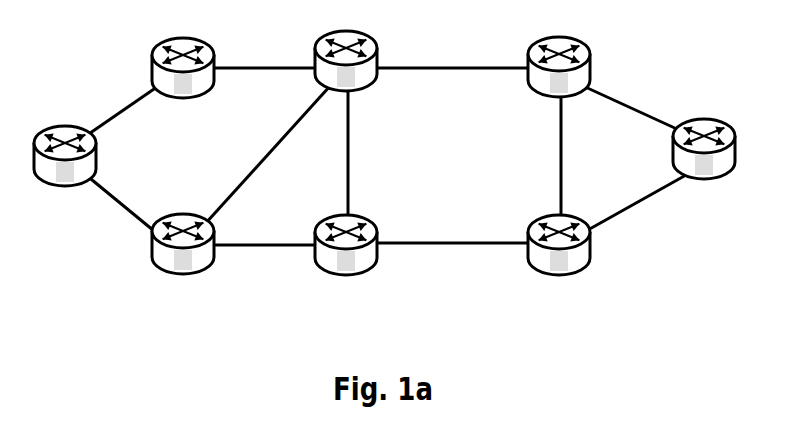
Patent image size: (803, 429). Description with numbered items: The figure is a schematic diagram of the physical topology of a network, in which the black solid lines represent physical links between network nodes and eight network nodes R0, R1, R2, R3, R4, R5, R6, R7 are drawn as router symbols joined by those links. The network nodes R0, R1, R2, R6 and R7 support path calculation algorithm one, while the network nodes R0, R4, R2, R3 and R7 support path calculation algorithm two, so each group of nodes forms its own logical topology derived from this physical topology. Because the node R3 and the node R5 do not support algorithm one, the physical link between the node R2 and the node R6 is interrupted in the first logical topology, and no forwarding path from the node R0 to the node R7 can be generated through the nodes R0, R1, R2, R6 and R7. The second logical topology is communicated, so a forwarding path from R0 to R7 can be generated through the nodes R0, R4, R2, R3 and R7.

The network node R0 is at (65, 142).
The network node R1 is at (183, 55).
The network node R2 is at (346, 48).
The network node R3 is at (559, 53).
The network node R4 is at (183, 258).
The network node R5 is at (346, 258).
The network node R6 is at (559, 258).
The network node R7 is at (704, 136).